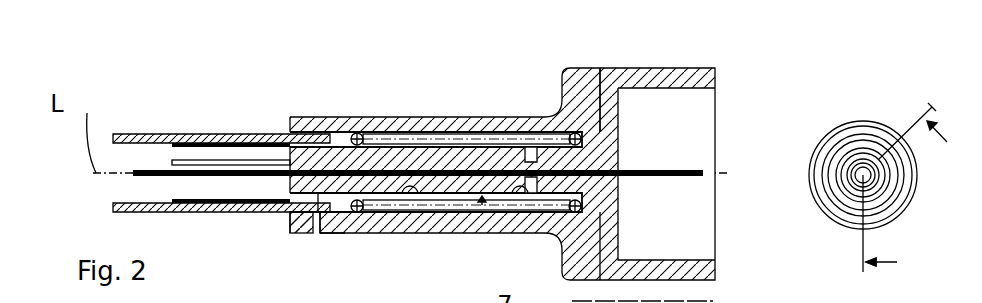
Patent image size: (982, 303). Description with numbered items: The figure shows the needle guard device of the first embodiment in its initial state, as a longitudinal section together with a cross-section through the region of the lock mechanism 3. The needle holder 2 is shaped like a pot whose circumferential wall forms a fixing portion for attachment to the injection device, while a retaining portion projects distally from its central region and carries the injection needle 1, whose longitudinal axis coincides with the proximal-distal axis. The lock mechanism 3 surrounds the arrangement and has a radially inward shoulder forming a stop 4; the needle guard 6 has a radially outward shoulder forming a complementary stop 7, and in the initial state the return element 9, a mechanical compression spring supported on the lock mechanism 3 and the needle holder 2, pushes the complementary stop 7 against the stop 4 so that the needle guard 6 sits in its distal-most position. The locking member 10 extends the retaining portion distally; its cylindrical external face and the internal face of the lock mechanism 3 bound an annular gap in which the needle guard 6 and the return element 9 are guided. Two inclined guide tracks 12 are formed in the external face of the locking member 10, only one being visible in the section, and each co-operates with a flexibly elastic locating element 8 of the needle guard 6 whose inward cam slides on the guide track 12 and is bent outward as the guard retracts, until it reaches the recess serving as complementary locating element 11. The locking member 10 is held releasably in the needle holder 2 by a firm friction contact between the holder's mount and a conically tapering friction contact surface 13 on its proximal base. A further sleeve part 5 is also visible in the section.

The injection needle 1 is at (145, 172).
The needle holder 2 is at (688, 67).
The lock mechanism 3 is at (473, 118).
The stop 4 is at (325, 135).
The sleeve 5 is at (330, 222).
The needle guard 6 is at (197, 135).
The complementary stop 7 is at (338, 133).
The locating element 8 is at (303, 220).
The return element 9 is at (580, 80).
The locking member 10 is at (502, 150).
The complementary locating element 11 is at (480, 208).
The guide track 12 is at (423, 192).
The friction contact surface 13 is at (513, 212).